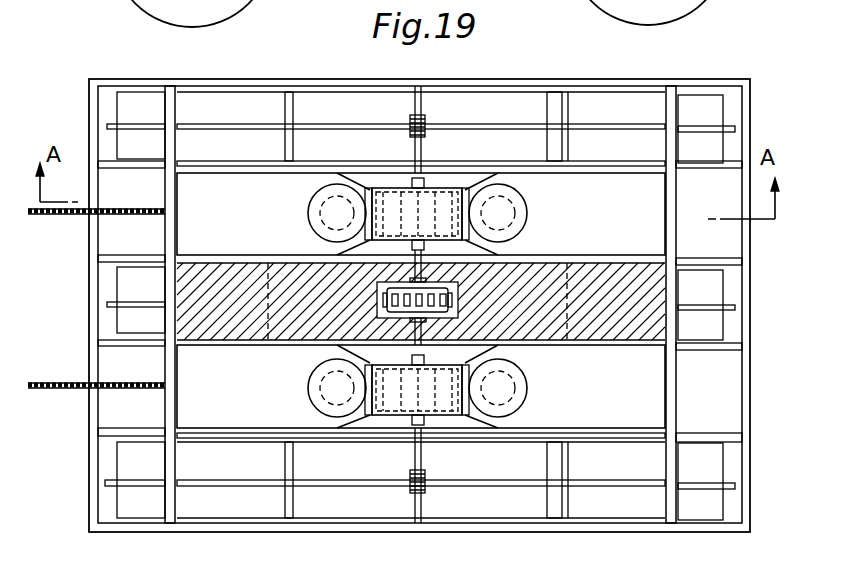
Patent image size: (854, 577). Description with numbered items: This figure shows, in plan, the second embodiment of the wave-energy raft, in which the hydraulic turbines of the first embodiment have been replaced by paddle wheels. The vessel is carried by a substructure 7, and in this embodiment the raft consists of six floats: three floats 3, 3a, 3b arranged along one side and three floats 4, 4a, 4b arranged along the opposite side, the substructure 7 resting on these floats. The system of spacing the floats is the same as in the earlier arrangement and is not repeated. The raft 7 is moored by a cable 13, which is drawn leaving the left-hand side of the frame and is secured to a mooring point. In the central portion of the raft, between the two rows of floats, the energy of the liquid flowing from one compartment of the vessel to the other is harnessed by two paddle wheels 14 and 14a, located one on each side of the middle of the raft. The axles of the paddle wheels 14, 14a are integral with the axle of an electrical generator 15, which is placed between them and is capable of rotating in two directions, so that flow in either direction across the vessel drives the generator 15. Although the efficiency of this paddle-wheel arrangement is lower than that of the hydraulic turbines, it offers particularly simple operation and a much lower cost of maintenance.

The float 3 is at (138, 518).
The float 3a is at (126, 322).
The float 3b is at (128, 106).
The float 4 is at (698, 466).
The float 4a is at (698, 290).
The float 4b is at (703, 110).
The substructure 7 is at (752, 371).
The cable 13 is at (63, 216).
The paddle wheel 14 is at (440, 202).
The paddle wheel 14a is at (450, 414).
The electrical generator 15 is at (456, 300).